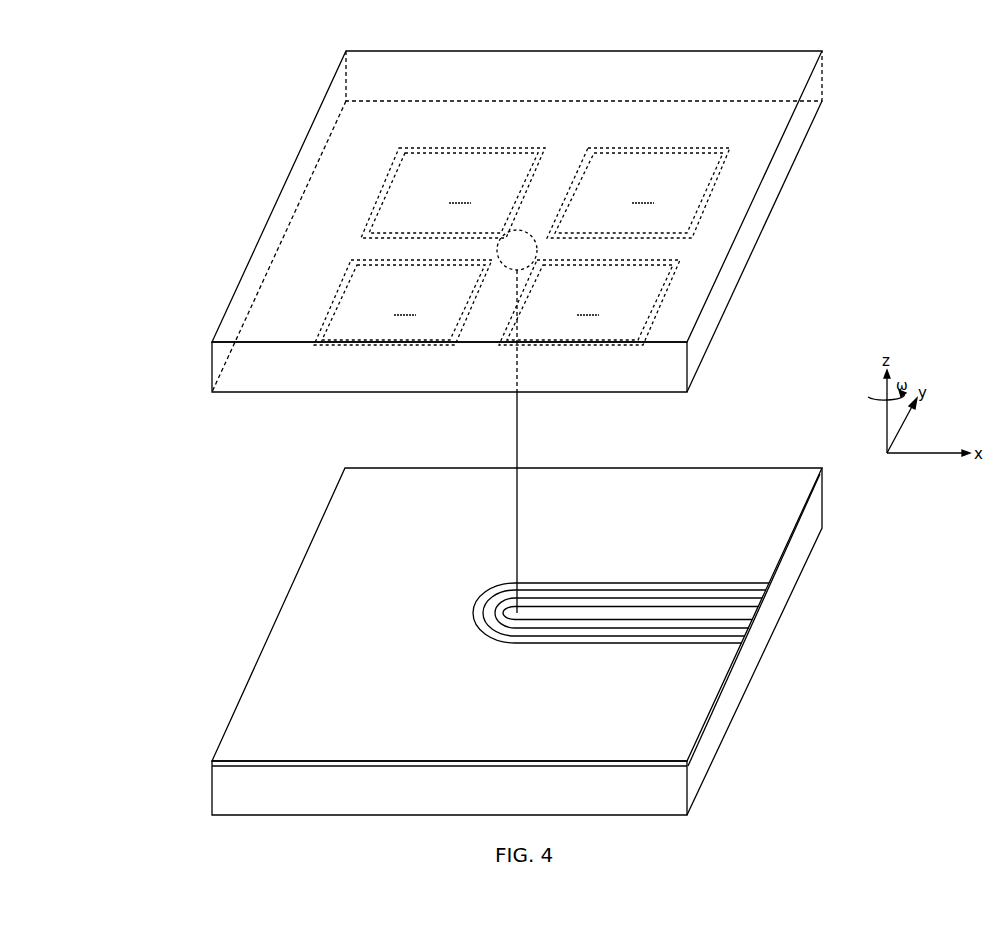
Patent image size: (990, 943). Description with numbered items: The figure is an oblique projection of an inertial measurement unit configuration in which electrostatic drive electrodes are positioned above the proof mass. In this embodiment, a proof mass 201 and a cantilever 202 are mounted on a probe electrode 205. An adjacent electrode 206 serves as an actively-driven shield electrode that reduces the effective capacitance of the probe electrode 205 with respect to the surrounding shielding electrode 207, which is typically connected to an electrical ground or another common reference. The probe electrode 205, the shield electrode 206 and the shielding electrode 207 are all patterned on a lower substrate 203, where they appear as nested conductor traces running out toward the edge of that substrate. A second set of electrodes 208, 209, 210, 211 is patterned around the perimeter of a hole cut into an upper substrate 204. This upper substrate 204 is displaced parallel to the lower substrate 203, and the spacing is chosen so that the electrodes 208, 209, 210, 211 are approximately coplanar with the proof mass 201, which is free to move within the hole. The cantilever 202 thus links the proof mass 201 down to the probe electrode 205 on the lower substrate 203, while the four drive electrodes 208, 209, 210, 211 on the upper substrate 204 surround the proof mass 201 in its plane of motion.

The proof mass 201 is at (528, 231).
The cantilever 202 is at (518, 435).
The substrate 203 is at (623, 798).
The substrate 204 is at (270, 381).
The probe electrode 205 is at (751, 614).
The shield electrode 206 is at (751, 597).
The shielding electrode 207 is at (767, 548).
The electrode 208 is at (702, 212).
The electrode 209 is at (378, 190).
The electrode 210 is at (333, 300).
The electrode 211 is at (662, 298).